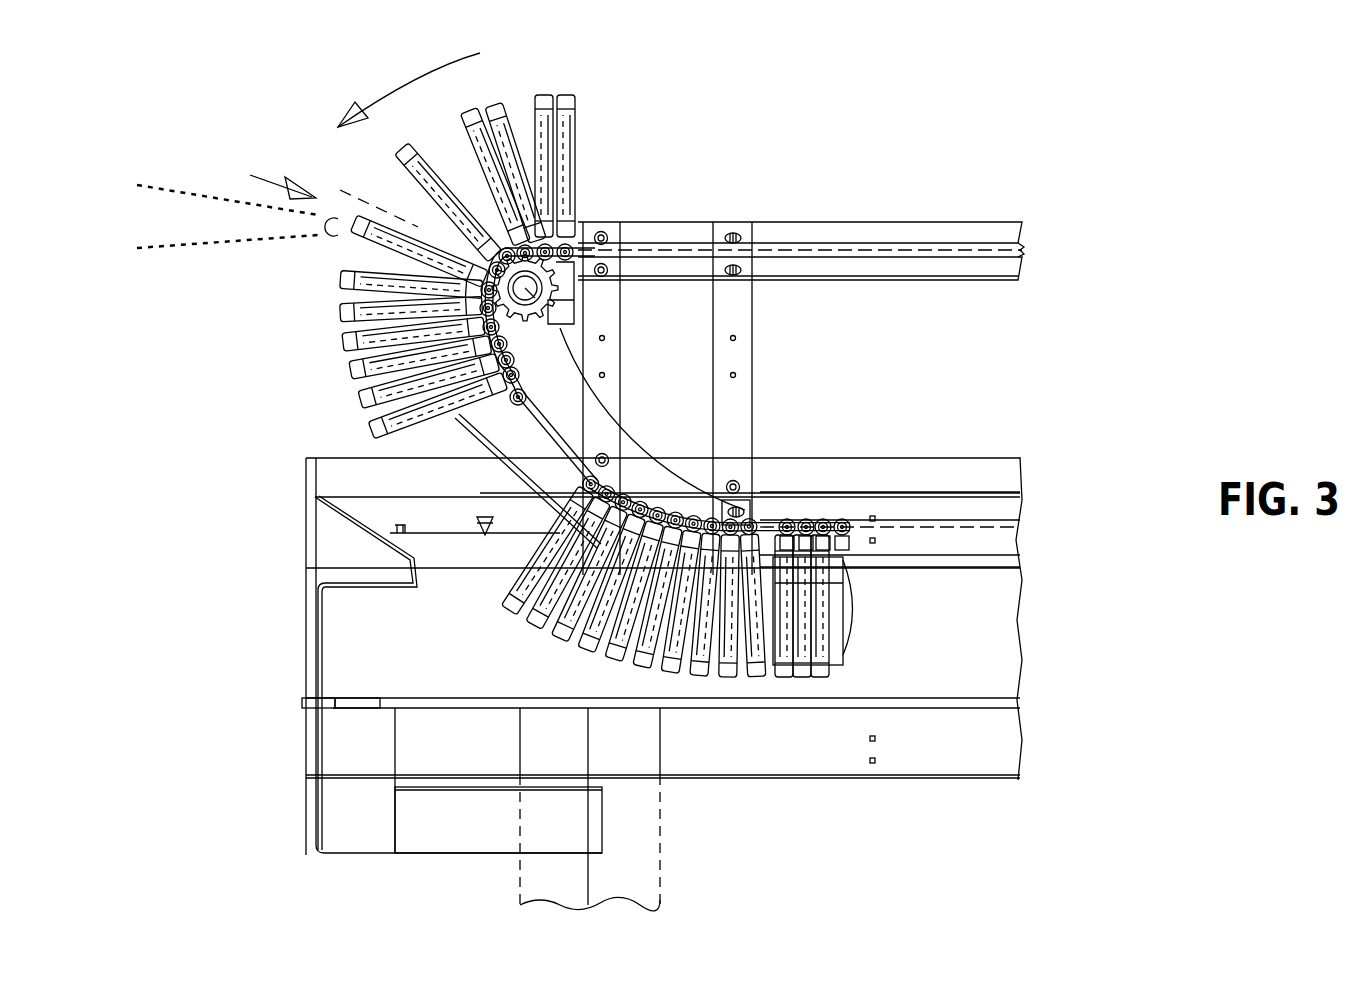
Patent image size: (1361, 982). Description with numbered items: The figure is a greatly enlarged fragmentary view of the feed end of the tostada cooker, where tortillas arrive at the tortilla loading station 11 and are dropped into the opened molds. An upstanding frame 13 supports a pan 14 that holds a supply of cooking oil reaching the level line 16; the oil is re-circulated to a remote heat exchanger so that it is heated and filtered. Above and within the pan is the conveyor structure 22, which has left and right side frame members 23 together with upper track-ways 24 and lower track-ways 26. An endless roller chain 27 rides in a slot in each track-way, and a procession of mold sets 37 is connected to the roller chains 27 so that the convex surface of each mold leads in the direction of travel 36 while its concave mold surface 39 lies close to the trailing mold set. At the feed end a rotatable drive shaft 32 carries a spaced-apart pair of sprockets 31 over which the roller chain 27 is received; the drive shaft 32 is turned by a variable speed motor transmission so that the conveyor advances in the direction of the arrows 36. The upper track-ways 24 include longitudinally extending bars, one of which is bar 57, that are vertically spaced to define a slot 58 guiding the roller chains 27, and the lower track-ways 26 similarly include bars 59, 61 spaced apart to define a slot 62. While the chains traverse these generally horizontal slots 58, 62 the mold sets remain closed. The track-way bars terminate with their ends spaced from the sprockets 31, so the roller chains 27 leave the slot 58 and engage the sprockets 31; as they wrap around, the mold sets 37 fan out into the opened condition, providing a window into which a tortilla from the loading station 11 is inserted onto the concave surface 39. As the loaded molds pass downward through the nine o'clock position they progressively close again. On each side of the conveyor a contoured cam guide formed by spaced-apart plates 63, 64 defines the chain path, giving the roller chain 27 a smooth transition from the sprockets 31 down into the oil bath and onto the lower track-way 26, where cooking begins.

The tortilla loading station 11 is at (235, 200).
The upstanding frame 13 is at (662, 852).
The pan 14 is at (322, 648).
The level line 16 is at (437, 532).
The conveyor structure 22 is at (825, 222).
The side frame members 23 is at (753, 388).
The upper track-ways 24 is at (1025, 260).
The lower track-ways 26 is at (997, 232).
The roller chain 27 is at (797, 520).
The sprockets 31 is at (565, 250).
The drive shaft 32 is at (580, 300).
The direction of travel 36 is at (398, 78).
The mold set 37 is at (570, 97).
The concave mold surface 39 is at (857, 625).
The longitudinally extending bar 57 is at (997, 272).
The slot 58 is at (1020, 236).
The longitudinally extending bar 59 is at (1005, 486).
The longitudinally extending bar 61 is at (998, 548).
The slot 62 is at (1022, 532).
The cam guide plate 63 is at (633, 440).
The cam guide plate 64 is at (480, 425).